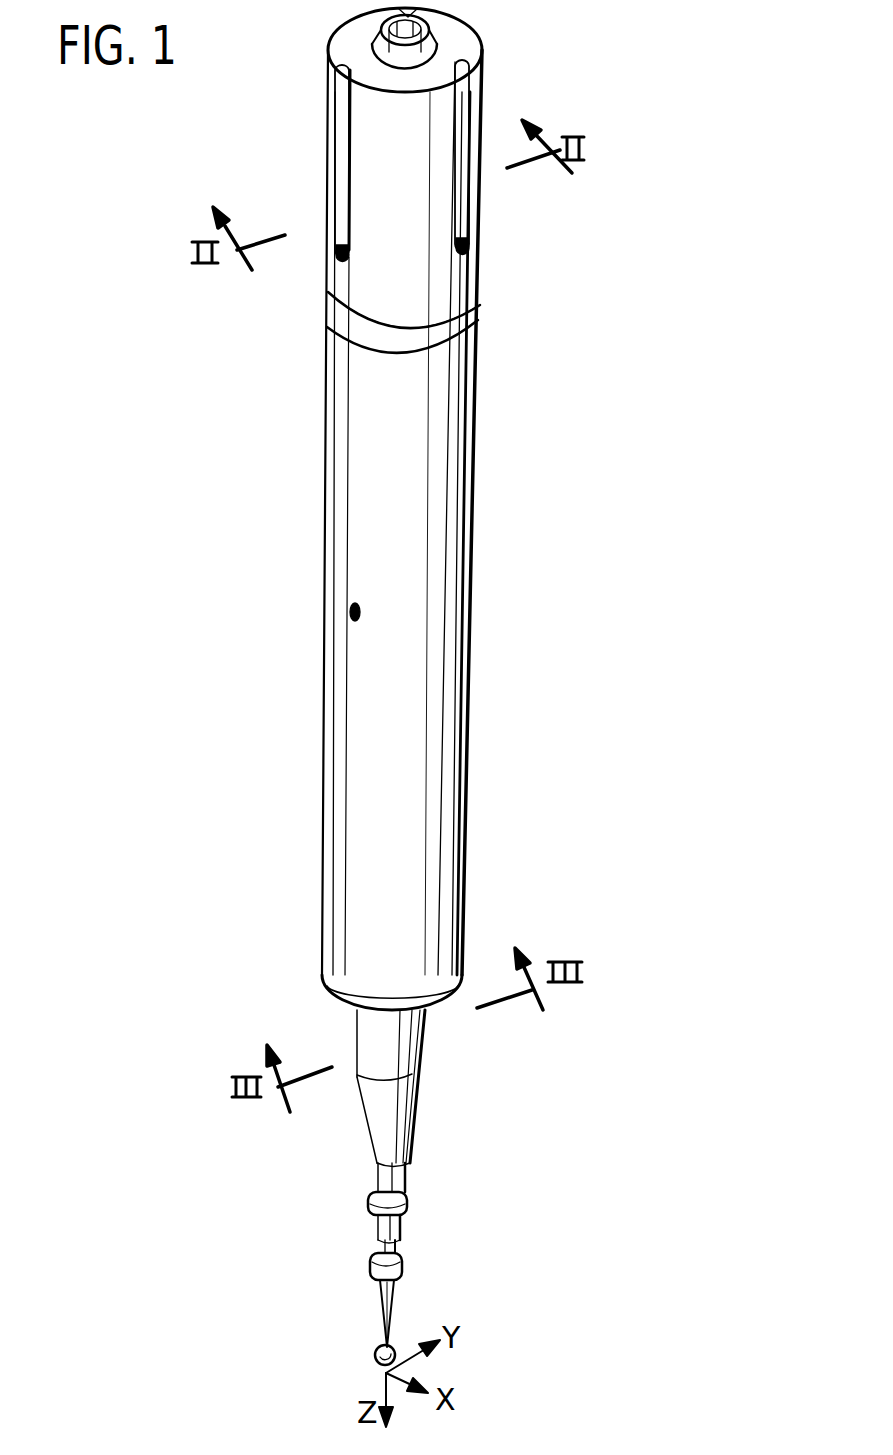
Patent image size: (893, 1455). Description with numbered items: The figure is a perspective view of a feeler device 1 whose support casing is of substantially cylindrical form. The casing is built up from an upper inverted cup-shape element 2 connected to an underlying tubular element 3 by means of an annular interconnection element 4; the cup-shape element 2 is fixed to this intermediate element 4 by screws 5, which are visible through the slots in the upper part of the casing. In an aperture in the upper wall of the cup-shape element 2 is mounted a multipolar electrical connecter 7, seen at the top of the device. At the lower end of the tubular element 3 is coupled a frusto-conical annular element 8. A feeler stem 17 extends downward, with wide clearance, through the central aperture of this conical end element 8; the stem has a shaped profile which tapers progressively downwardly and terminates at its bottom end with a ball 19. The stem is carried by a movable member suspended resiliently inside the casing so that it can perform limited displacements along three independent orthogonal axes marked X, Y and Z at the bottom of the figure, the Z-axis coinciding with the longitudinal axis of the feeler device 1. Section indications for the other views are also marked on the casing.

The feeler device 1 is at (433, 686).
The upper inverted cup-shape element 2 is at (331, 287).
The tubular element 3 is at (342, 447).
The annular interconnection element 4 is at (440, 326).
The screws 5 is at (341, 240).
The multipolar electrical connecter 7 is at (453, 38).
The frusto-conical annular element 8 is at (408, 1015).
The feeler stem 17 is at (454, 1230).
The ball 19 is at (377, 1351).